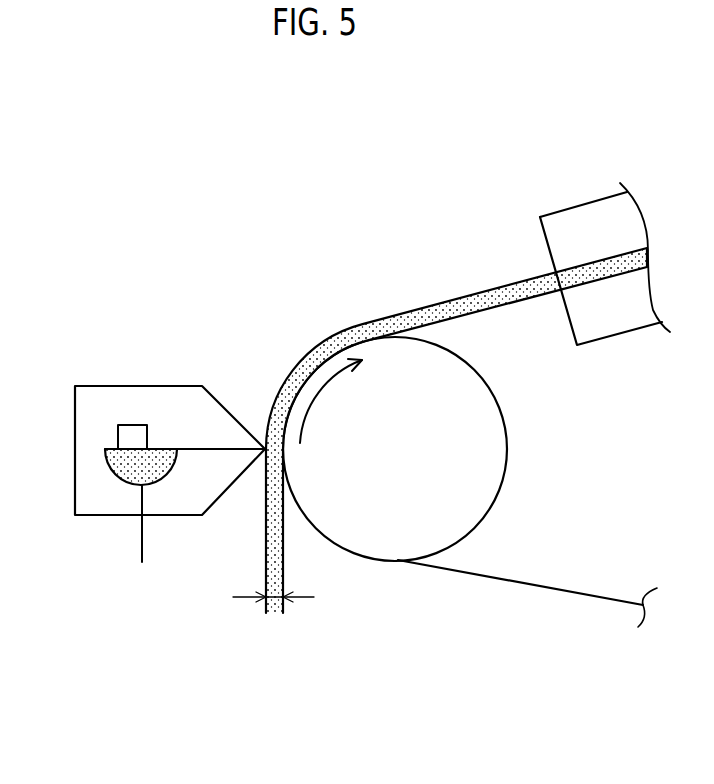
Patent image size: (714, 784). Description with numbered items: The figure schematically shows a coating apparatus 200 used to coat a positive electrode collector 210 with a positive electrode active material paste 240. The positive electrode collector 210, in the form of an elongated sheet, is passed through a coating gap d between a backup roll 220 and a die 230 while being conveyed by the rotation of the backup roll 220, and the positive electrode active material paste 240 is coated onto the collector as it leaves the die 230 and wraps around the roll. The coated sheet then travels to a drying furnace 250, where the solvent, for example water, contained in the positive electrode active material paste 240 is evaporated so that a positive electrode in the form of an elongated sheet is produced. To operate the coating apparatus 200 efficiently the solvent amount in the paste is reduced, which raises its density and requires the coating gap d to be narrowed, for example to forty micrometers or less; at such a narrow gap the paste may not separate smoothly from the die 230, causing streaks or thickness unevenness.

The coating apparatus 200 is at (110, 188).
The positive electrode collector 210 is at (528, 587).
The backup roll 220 is at (488, 452).
The die 230 is at (153, 387).
The positive electrode active material paste 240 is at (110, 468).
The drying furnace 250 is at (587, 202).